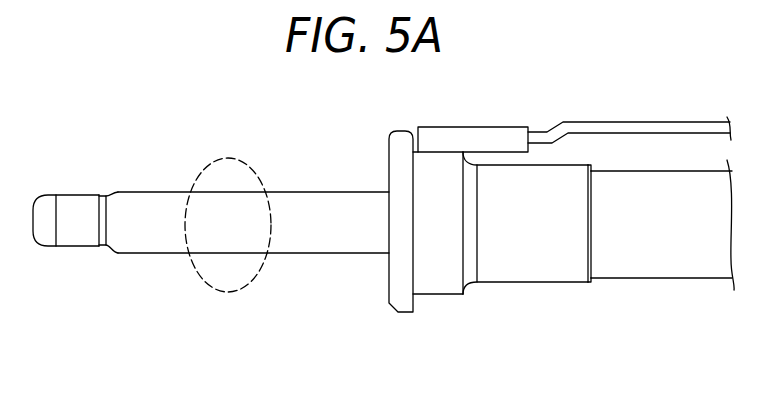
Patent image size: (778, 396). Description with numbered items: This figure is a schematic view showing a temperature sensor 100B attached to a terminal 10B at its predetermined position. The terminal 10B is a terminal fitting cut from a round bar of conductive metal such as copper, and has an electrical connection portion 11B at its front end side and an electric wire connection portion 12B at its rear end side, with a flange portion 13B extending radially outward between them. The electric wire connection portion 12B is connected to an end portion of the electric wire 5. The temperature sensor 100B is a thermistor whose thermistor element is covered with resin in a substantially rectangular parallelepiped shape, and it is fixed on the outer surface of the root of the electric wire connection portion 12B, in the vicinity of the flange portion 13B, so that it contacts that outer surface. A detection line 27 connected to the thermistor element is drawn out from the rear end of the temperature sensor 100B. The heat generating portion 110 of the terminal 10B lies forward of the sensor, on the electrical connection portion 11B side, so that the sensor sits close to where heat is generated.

The terminal 10B is at (329, 186).
The electrical connection portion 11B is at (153, 237).
The heat generating portion 110 is at (207, 162).
The flange portion 13B is at (402, 297).
The electric wire connection portion 12B is at (508, 258).
The temperature sensor 100B is at (486, 127).
The detection line 27 is at (663, 122).
The electric wire 5 is at (660, 258).